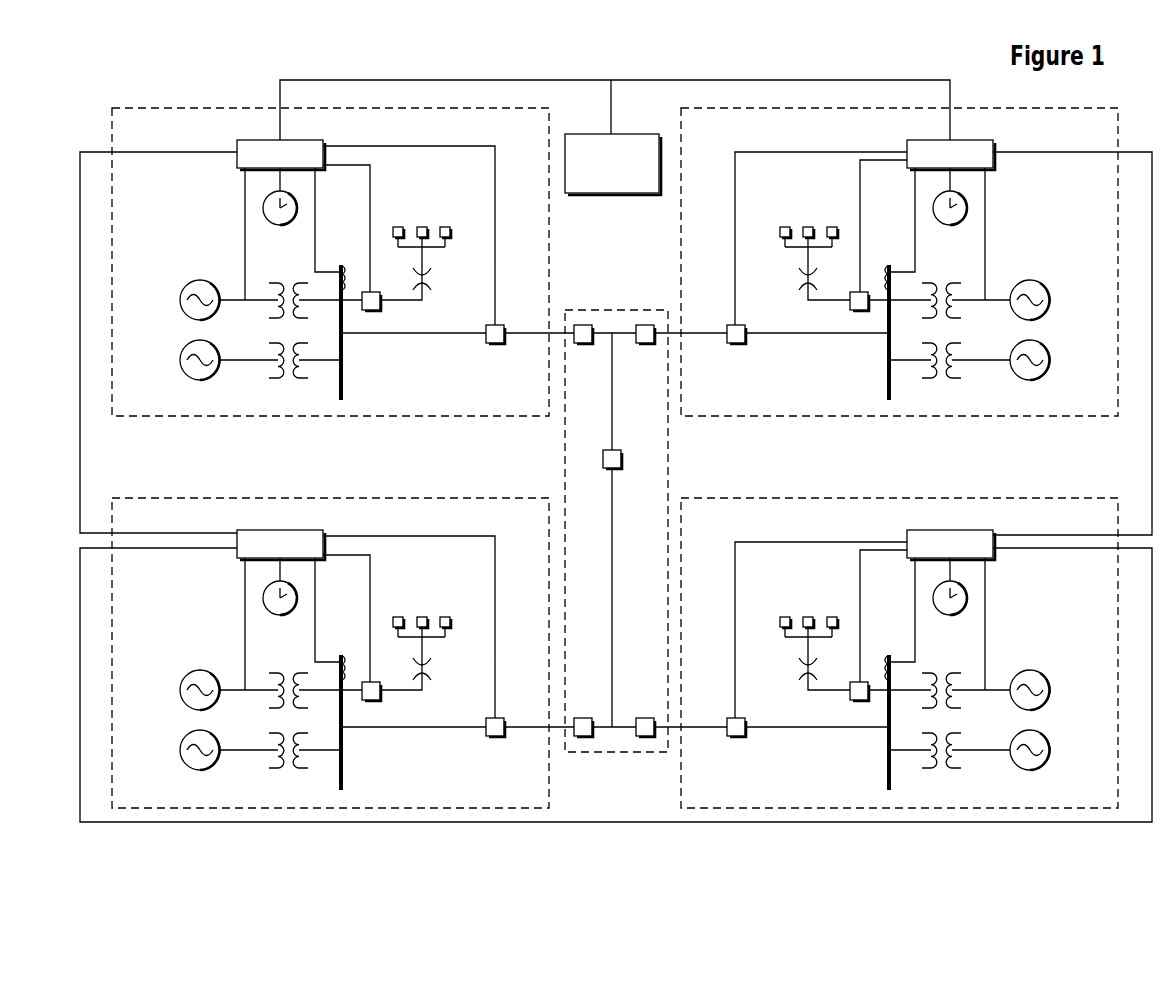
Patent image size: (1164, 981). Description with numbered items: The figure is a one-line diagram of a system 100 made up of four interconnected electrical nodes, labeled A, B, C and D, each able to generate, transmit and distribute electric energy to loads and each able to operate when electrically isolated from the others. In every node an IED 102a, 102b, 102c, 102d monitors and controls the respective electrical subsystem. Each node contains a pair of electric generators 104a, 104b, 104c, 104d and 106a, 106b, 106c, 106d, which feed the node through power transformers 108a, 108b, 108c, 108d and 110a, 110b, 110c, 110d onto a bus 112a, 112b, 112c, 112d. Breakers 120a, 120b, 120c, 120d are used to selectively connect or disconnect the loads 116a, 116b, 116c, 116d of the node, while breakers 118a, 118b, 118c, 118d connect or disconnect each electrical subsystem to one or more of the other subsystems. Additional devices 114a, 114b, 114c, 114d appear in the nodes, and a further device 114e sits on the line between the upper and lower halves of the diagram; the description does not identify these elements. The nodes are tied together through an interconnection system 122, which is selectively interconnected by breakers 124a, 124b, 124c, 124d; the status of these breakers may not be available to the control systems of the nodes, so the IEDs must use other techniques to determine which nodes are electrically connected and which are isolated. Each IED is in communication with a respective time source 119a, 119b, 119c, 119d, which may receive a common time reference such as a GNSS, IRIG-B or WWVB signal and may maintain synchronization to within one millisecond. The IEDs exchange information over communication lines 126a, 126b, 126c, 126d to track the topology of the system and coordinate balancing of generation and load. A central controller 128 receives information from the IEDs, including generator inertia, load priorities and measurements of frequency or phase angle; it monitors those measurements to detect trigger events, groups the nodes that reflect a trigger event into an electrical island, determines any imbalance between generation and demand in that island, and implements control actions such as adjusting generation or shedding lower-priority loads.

The system 100 is at (133, 104).
The IED 102a is at (237, 165).
The IED 102b is at (993, 165).
The IED 102c is at (237, 555).
The IED 102d is at (993, 555).
The generator 104a is at (180, 300).
The generator 104b is at (1050, 300).
The generator 104c is at (180, 690).
The generator 104d is at (1050, 690).
The generator 106a is at (180, 360).
The generator 106b is at (1050, 360).
The generator 106c is at (180, 750).
The generator 106d is at (1050, 750).
The transformer 108a is at (277, 319).
The transformer 108b is at (953, 319).
The transformer 108c is at (277, 709).
The transformer 108d is at (953, 709).
The transformer 110a is at (277, 379).
The transformer 110b is at (953, 379).
The transformer 110c is at (277, 769).
The transformer 110d is at (953, 769).
The bus 112a is at (343, 383).
The bus 112b is at (887, 383).
The bus 112c is at (343, 773).
The bus 112d is at (887, 773).
The current transformer 114a is at (432, 275).
The current transformer 114b is at (798, 275).
The current transformer 114c is at (432, 665).
The current transformer 114d is at (798, 665).
The breaker on transmission line 114e is at (610, 468).
The loads 116a is at (404, 228).
The loads 116b is at (826, 228).
The loads 116c is at (404, 618).
The loads 116d is at (826, 618).
The breaker 118a is at (492, 345).
The breaker 118b is at (738, 345).
The breaker 118c is at (492, 738).
The breaker 118d is at (738, 738).
The time source 119a is at (280, 225).
The time source 119b is at (950, 225).
The time source 119c is at (280, 615).
The time source 119d is at (950, 615).
The breaker 120a is at (382, 308).
The breaker 120b is at (848, 308).
The breaker 120c is at (382, 698).
The breaker 120d is at (848, 698).
The interconnection system 122 is at (565, 460).
The breaker 124a is at (583, 343).
The breaker 124b is at (645, 343).
The breaker 124c is at (583, 718).
The breaker 124d is at (645, 718).
The communication line 126a is at (540, 80).
The communication line 126b is at (1152, 452).
The communication line 126c is at (80, 455).
The communication line 126d is at (612, 822).
The central controller 128 is at (611, 195).